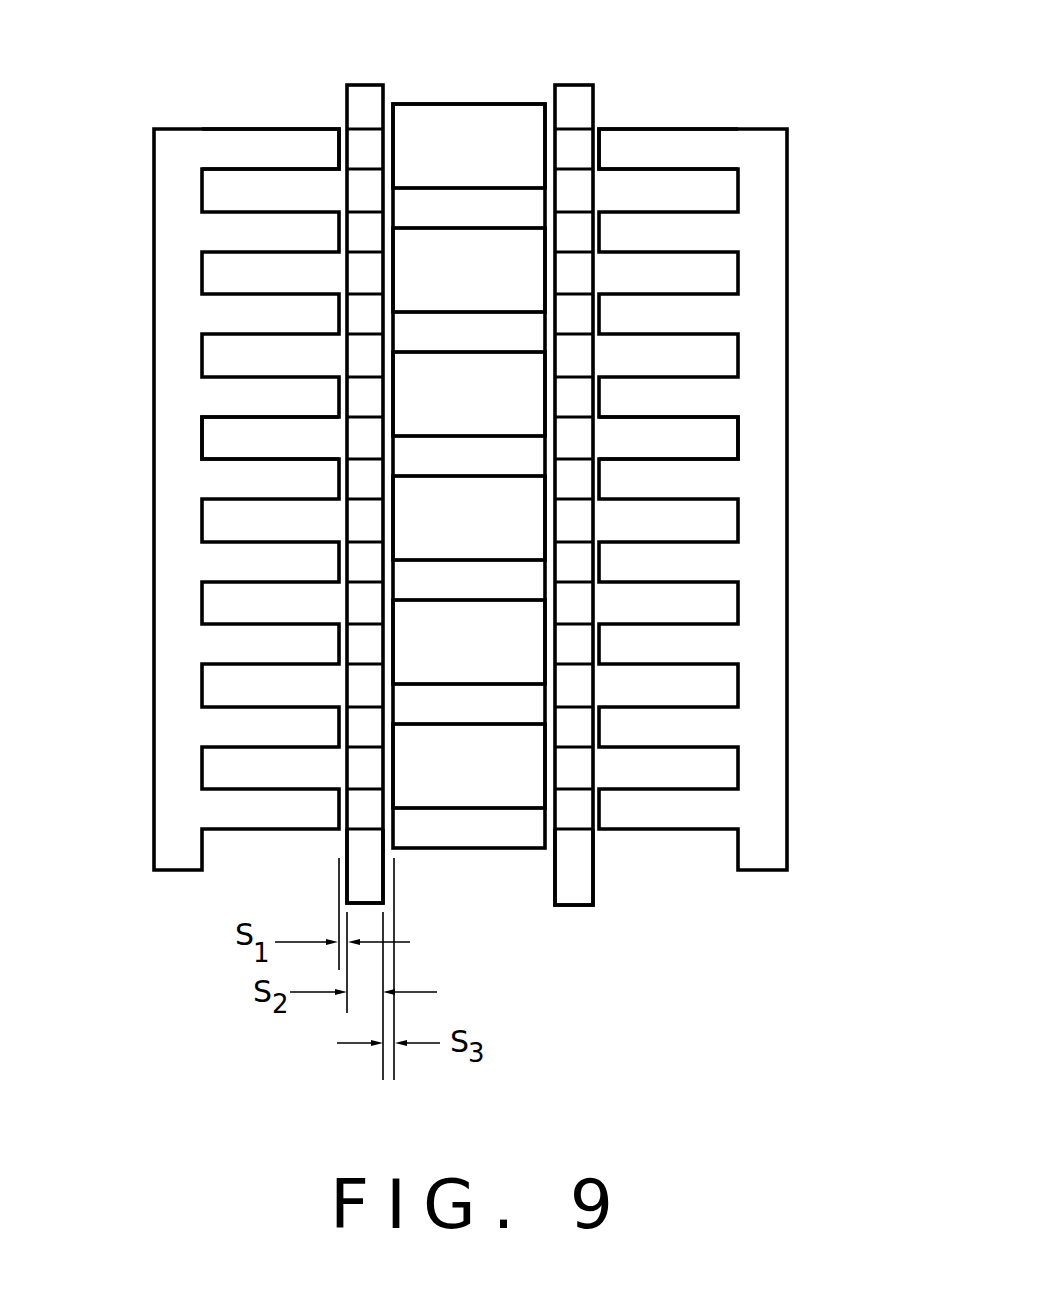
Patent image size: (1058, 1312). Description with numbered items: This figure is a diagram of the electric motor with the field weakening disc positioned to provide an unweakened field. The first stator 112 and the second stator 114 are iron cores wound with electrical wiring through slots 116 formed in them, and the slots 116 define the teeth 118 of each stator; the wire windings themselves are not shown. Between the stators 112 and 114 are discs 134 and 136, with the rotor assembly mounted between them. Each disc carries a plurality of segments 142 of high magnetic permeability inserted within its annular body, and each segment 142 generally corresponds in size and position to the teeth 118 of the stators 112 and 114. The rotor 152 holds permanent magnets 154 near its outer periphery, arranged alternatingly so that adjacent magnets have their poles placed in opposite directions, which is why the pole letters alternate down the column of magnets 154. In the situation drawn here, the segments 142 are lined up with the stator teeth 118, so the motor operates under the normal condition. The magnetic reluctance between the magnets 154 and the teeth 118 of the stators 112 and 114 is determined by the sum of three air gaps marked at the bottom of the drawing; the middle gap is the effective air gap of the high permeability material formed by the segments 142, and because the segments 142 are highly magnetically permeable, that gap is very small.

The first stator 112 is at (762, 172).
The second stator 114 is at (173, 222).
The slots 116 is at (222, 444).
The teeth 118 is at (253, 140).
The disc 134 is at (578, 872).
The disc 136 is at (363, 860).
The segments 142 is at (363, 145).
The rotor 152 is at (468, 828).
The permanent magnets 154 is at (437, 122).